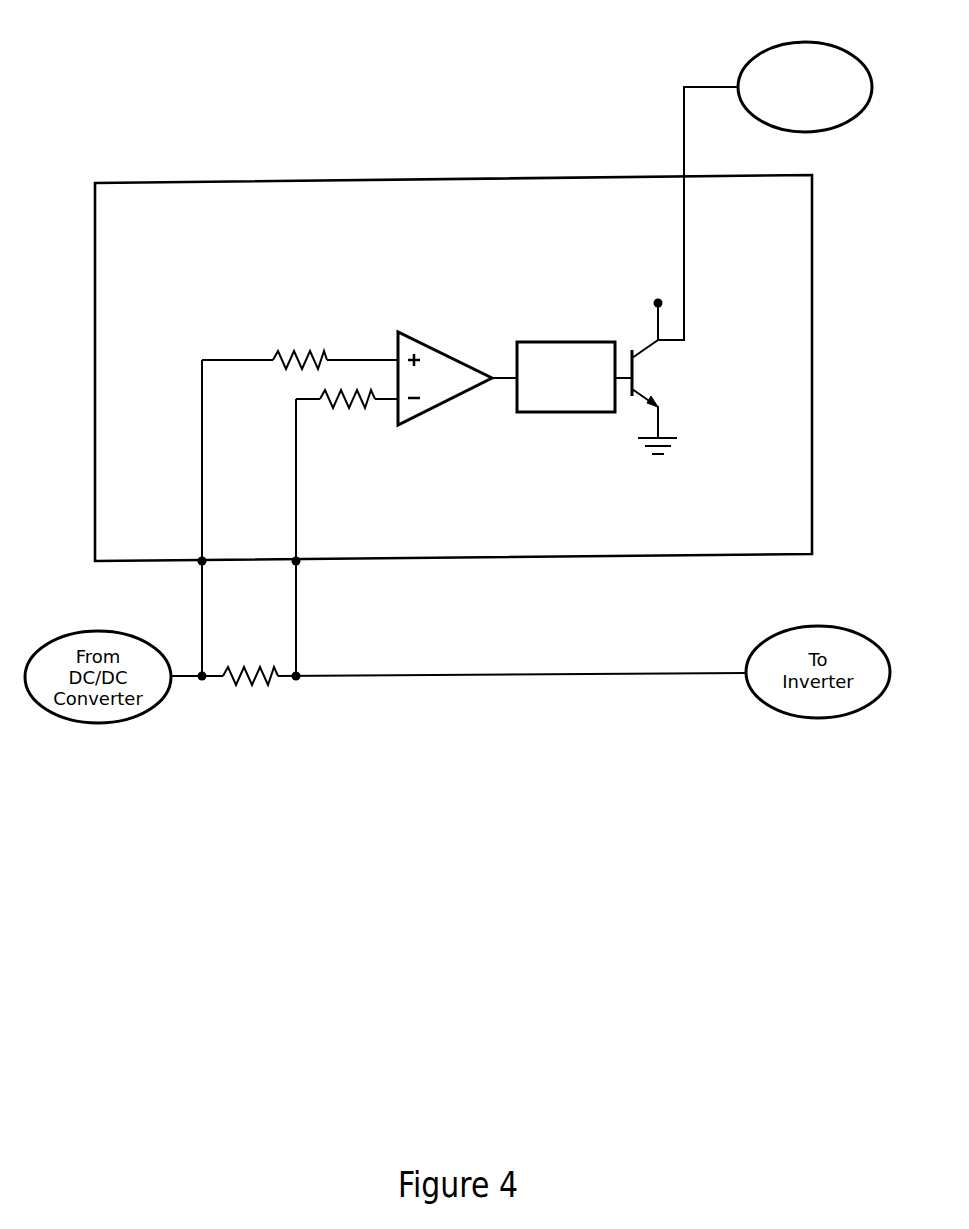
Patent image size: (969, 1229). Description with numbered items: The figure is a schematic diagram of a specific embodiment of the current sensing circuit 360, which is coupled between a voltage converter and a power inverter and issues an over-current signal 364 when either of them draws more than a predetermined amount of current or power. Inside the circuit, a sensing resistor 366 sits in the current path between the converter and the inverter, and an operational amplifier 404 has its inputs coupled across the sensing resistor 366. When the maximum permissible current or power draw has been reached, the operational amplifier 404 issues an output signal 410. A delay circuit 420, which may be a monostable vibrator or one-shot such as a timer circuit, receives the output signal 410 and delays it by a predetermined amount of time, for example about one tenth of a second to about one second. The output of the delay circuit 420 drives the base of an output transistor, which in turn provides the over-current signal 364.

The current sensing circuit 360 is at (541, 236).
The over-current signal 364 is at (707, 86).
The sensing resistor 366 is at (252, 683).
The operational amplifier 404 is at (452, 367).
The output signal 410 is at (500, 380).
The delay circuit 420 is at (570, 412).